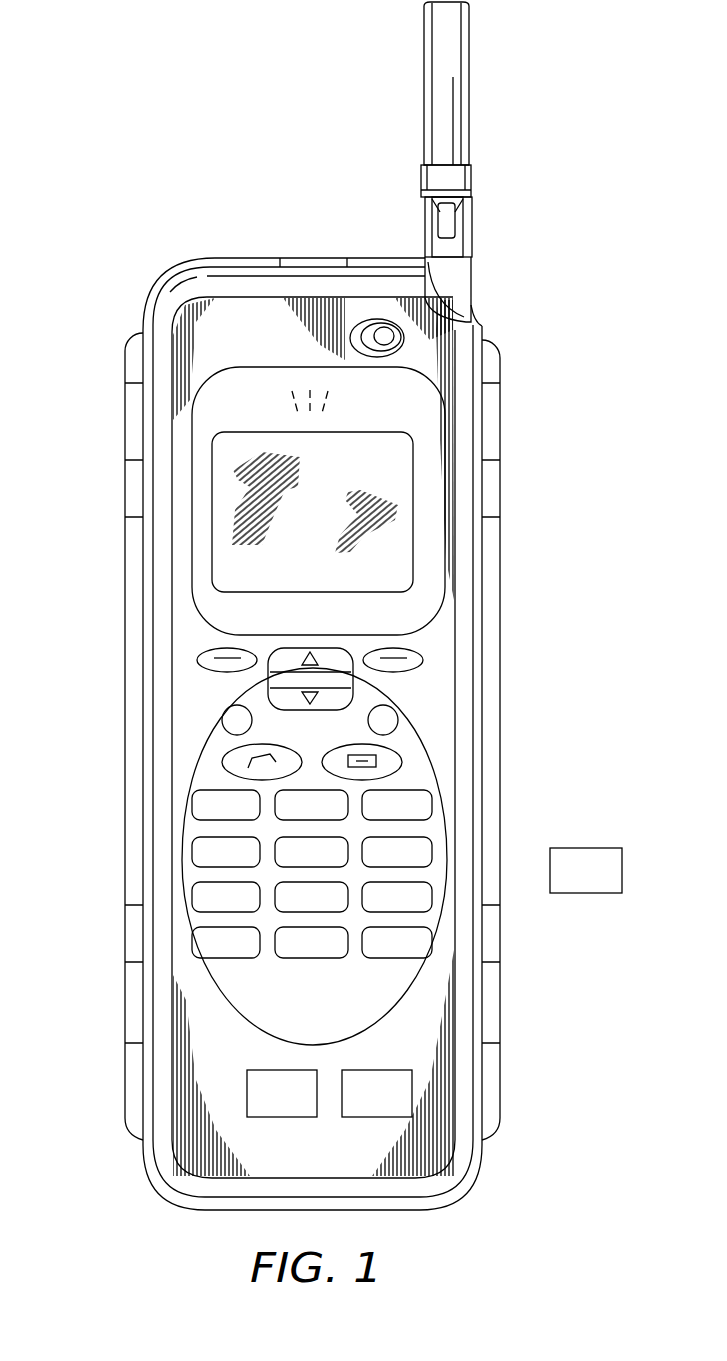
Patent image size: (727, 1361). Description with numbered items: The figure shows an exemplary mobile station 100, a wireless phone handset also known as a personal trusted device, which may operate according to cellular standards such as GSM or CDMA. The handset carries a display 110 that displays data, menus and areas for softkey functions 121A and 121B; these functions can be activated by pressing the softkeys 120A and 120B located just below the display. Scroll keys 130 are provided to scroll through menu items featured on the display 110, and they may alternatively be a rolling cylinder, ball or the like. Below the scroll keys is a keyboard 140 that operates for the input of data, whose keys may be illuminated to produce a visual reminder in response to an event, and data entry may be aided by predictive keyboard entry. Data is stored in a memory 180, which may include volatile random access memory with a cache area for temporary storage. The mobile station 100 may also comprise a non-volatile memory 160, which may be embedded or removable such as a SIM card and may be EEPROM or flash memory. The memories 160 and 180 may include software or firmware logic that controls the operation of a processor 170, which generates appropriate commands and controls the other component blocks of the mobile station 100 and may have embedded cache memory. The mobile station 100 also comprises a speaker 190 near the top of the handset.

The mobile station 100 is at (130, 158).
The display 110 is at (215, 525).
The softkey 120A is at (200, 658).
The softkey 120B is at (420, 650).
The softkey function 121A is at (222, 576).
The softkey function 121B is at (405, 577).
The scroll keys 130 is at (268, 680).
The keyboard 140 is at (190, 830).
The non-volatile memory 160 is at (455, 870).
The processor 170 is at (280, 1045).
The memory 180 is at (317, 1092).
The speaker 190 is at (325, 400).